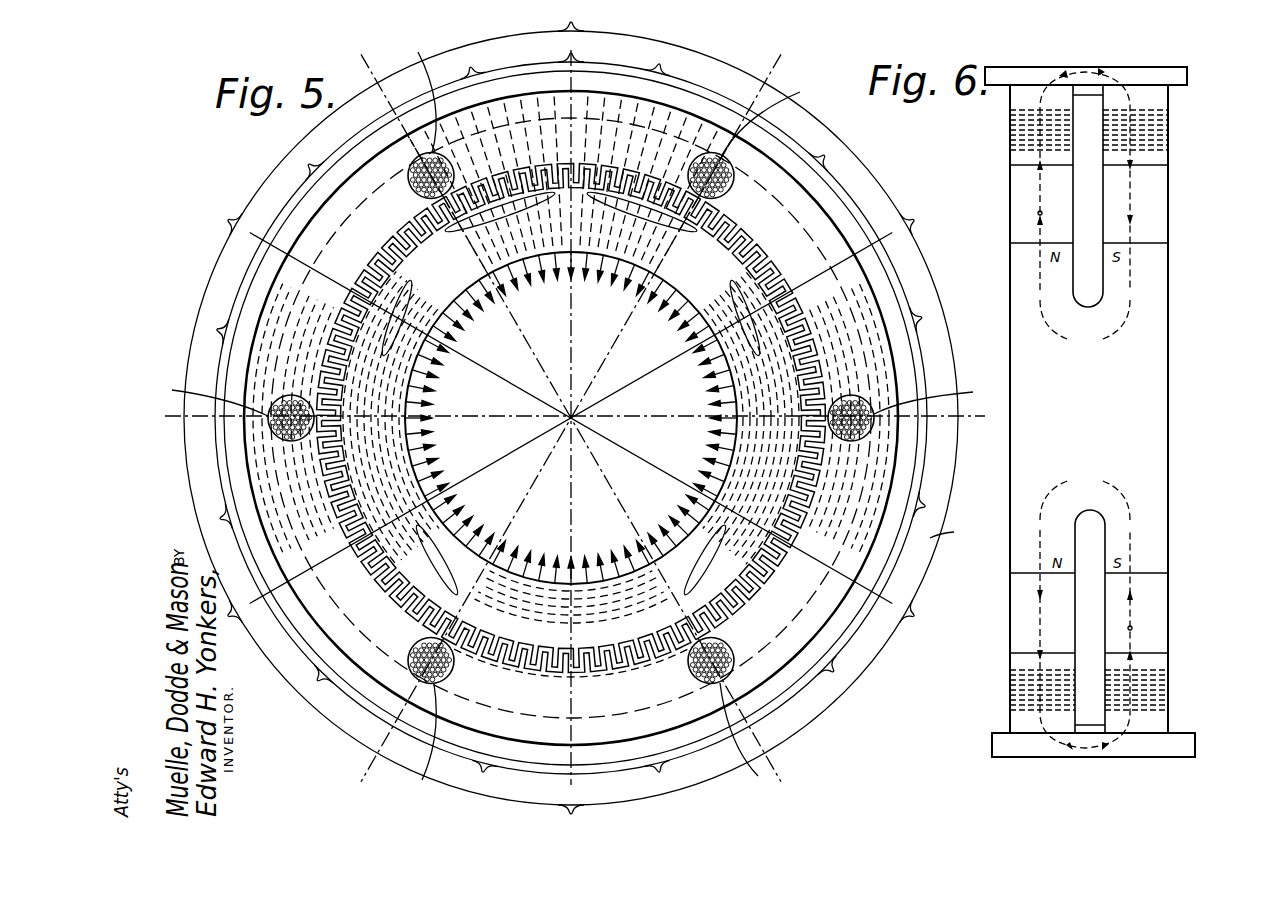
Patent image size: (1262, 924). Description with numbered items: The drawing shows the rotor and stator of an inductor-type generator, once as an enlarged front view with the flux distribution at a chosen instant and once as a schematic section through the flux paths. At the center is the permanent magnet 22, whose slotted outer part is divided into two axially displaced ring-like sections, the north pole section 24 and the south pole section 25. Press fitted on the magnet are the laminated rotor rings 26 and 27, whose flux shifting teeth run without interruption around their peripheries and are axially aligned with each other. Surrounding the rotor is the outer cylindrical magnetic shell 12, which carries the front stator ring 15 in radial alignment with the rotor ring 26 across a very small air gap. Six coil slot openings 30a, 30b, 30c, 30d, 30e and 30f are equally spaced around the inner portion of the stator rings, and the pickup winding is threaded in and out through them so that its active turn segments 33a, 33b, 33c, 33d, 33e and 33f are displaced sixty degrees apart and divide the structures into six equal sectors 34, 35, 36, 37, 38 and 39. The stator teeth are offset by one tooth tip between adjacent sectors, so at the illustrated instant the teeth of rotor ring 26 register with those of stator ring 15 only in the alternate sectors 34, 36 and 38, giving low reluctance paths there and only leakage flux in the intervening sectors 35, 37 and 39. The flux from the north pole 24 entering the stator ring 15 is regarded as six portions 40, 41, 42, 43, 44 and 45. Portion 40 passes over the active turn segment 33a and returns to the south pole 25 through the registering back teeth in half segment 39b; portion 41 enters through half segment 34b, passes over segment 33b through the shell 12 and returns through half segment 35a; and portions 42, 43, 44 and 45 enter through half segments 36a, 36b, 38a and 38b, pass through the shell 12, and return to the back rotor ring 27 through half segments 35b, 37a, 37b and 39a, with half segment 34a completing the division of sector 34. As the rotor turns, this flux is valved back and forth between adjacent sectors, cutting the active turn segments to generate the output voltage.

In FIG. 5, the outer cylindrical magnetic shell 12 is at (954, 532).
In FIG. 6, the outer cylindrical magnetic shell 12 is at (1146, 66).
In FIG. 5, the stator ring 15 is at (612, 704).
In FIG. 5, the permanent magnet 22 is at (555, 523).
In FIG. 6, the permanent magnet 22 is at (1150, 380).
In FIG. 6, the north pole section 24 is at (1030, 243).
In FIG. 6, the south pole section 25 is at (1150, 240).
In FIG. 5, the rotor ring 26 is at (609, 632).
In FIG. 6, the rotor ring 26 is at (1010, 188).
In FIG. 6, the rotor ring 27 is at (1168, 192).
In FIG. 5, the coil slot opening 30a is at (409, 94).
In FIG. 5, the coil slot opening 30b is at (777, 114).
In FIG. 5, the coil slot opening 30c is at (940, 396).
In FIG. 5, the coil slot opening 30d is at (750, 740).
In FIG. 5, the coil slot opening 30e is at (414, 743).
In FIG. 5, the coil slot opening 30f is at (204, 396).
In FIG. 5, the active turn segment 33a is at (418, 196).
In FIG. 6, the active turn segment 33a is at (1160, 100).
In FIG. 5, the active turn segment 33b is at (726, 196).
In FIG. 5, the active turn segment 33c is at (850, 395).
In FIG. 5, the active turn segment 33d is at (712, 684).
In FIG. 6, the active turn segment 33d is at (1158, 650).
In FIG. 5, the active turn segment 33e is at (452, 676).
In FIG. 5, the active turn segment 33f is at (292, 395).
In FIG. 5, the sector 34 is at (578, 30).
In FIG. 5, the half segment of sector 34 34a is at (473, 74).
In FIG. 5, the half segment of sector 34 34b is at (657, 70).
In FIG. 5, the sector 35 is at (910, 222).
In FIG. 5, the half segment of sector 35 35a is at (819, 160).
In FIG. 5, the half segment of sector 35 35b is at (914, 322).
In FIG. 5, the sector 36 is at (908, 612).
In FIG. 5, the half segment of sector 36 36a is at (918, 504).
In FIG. 5, the half segment of sector 36 36b is at (827, 668).
In FIG. 5, the sector 37 is at (578, 805).
In FIG. 5, the half segment of sector 37 37a is at (659, 760).
In FIG. 5, the half segment of sector 37 37b is at (486, 762).
In FIG. 5, the sector 38 is at (238, 615).
In FIG. 5, the half segment of sector 38 38a is at (326, 678).
In FIG. 5, the half segment of sector 38 38b is at (226, 504).
In FIG. 5, the sector 39 is at (234, 224).
In FIG. 5, the half segment of sector 39 39a is at (226, 335).
In FIG. 5, the half segment of sector 39 39b is at (316, 170).
In FIG. 5, the flux portion 40 is at (470, 218).
In FIG. 6, the flux portion 40 is at (1038, 213).
In FIG. 5, the flux portion 41 is at (672, 218).
In FIG. 5, the flux portion 42 is at (760, 345).
In FIG. 5, the flux portion 43 is at (700, 580).
In FIG. 6, the flux portion 43 is at (1132, 626).
In FIG. 5, the flux portion 44 is at (445, 580).
In FIG. 5, the flux portion 45 is at (385, 345).